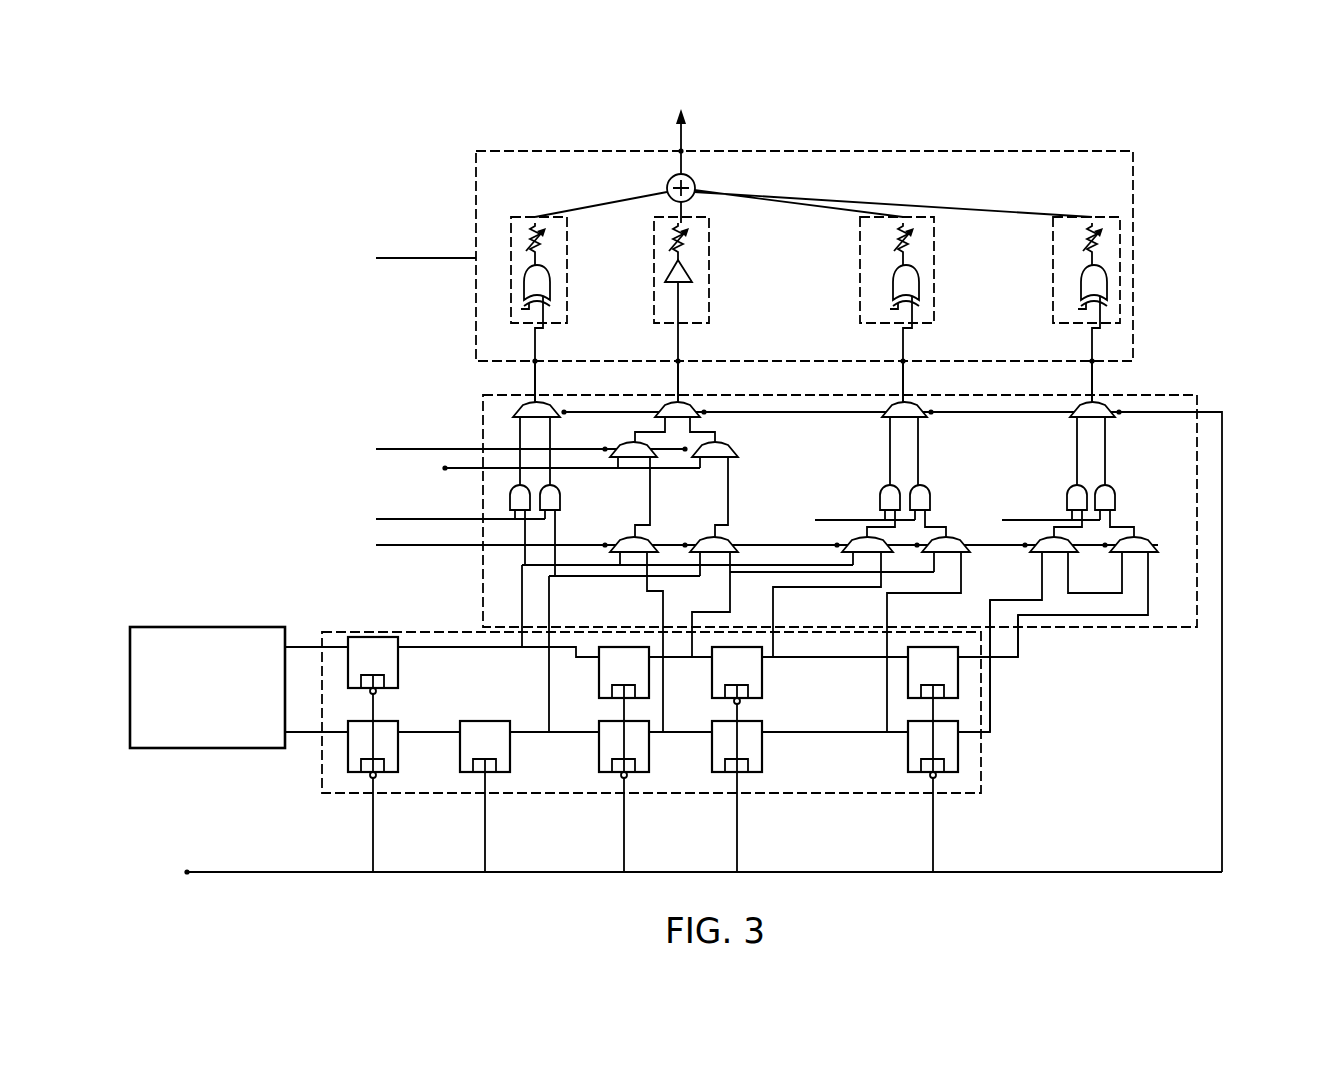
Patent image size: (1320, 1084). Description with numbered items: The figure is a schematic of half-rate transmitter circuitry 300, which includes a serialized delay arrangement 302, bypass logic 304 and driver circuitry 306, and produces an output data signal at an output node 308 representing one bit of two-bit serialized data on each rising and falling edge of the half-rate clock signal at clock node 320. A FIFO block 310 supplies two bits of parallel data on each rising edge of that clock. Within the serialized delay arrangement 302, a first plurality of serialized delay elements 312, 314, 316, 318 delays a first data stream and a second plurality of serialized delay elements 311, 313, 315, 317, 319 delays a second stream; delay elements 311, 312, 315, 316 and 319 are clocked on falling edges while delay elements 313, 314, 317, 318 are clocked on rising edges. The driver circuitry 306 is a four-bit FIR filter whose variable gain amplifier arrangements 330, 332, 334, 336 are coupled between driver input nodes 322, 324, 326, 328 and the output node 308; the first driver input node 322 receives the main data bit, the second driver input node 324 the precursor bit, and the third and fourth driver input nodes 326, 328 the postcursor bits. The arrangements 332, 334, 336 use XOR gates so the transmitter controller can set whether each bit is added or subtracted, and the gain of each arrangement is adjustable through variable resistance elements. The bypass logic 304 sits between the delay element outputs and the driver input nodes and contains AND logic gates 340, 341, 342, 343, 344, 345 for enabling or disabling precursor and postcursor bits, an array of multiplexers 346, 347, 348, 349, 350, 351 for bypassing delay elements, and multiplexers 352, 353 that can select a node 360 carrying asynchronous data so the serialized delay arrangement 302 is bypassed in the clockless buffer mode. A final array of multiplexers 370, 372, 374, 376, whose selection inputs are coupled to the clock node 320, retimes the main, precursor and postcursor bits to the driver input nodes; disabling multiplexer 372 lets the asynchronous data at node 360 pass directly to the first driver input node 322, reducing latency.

The transmitter circuitry 300 is at (1166, 165).
The serialized delay arrangement 302 is at (981, 785).
The bypass logic 304 is at (1197, 488).
The driver circuitry 306 is at (1133, 256).
The output node 308 is at (683, 151).
The FIFO block 310 is at (186, 627).
The serialized delay element 311 is at (355, 772).
The serialized delay element 312 is at (358, 637).
The serialized delay element 313 is at (468, 772).
The serialized delay element 314 is at (618, 647).
The serialized delay element 315 is at (610, 772).
The serialized delay element 316 is at (762, 672).
The serialized delay element 317 is at (723, 772).
The serialized delay element 318 is at (958, 672).
The serialized delay element 319 is at (918, 772).
The clock node 320 is at (187, 872).
The first driver input node 322 is at (703, 346).
The second driver input node 324 is at (560, 346).
The third driver input node 326 is at (928, 346).
The fourth driver input node 328 is at (1090, 359).
The variable gain amplifier arrangement 330 is at (709, 258).
The variable gain amplifier arrangement 332 is at (567, 258).
The variable gain amplifier arrangement 334 is at (934, 258).
The variable gain amplifier arrangement 336 is at (1053, 292).
The AND logic gate 340 is at (510, 497).
The AND logic gate 341 is at (560, 500).
The AND logic gate 342 is at (882, 488).
The AND logic gate 343 is at (930, 498).
The AND logic gate 344 is at (1070, 489).
The AND logic gate 345 is at (1115, 498).
The multiplexer 346 is at (615, 545).
The multiplexer 347 is at (703, 545).
The multiplexer 348 is at (862, 556).
The multiplexer 349 is at (943, 556).
The multiplexer 350 is at (1053, 557).
The multiplexer 351 is at (1127, 557).
The multiplexer 352 is at (607, 449).
The multiplexer 353 is at (738, 450).
The node 360 is at (445, 468).
The multiplexer 370 is at (518, 405).
The multiplexer 372 is at (660, 405).
The multiplexer 374 is at (888, 405).
The multiplexer 376 is at (1073, 405).